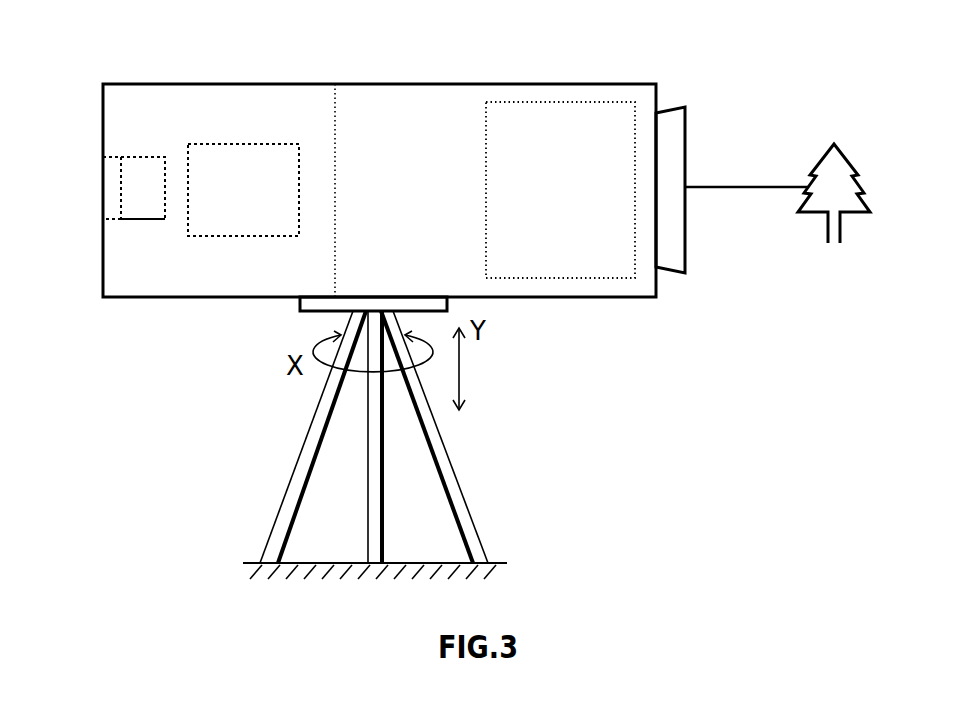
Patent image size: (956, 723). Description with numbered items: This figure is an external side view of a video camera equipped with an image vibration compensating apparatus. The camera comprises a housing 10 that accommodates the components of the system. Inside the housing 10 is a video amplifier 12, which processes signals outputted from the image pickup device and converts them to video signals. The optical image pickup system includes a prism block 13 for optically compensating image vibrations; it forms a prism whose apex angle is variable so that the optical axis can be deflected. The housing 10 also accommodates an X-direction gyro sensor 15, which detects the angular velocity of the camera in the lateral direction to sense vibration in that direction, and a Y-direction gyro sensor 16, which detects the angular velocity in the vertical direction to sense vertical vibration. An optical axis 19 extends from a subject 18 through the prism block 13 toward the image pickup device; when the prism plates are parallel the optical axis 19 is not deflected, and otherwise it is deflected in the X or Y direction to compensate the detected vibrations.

The housing 10 is at (207, 84).
The video amplifier 12 is at (245, 237).
The prism block 13 is at (605, 279).
The X-direction gyro sensor 15 is at (148, 220).
The Y-direction gyro sensor 16 is at (112, 183).
The subject 18 is at (800, 213).
The optical axis 19 is at (744, 187).